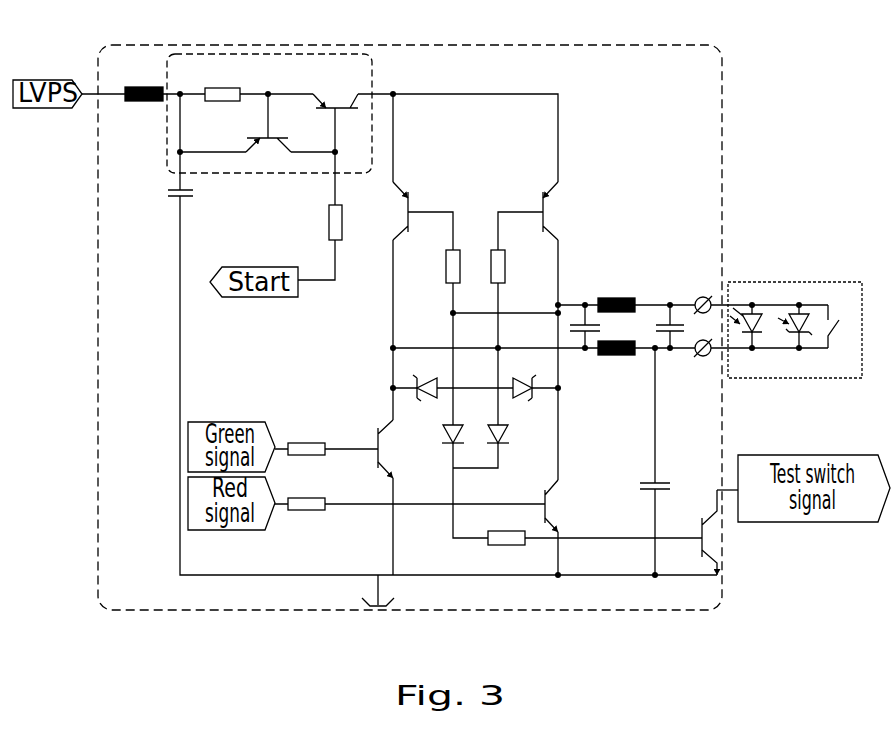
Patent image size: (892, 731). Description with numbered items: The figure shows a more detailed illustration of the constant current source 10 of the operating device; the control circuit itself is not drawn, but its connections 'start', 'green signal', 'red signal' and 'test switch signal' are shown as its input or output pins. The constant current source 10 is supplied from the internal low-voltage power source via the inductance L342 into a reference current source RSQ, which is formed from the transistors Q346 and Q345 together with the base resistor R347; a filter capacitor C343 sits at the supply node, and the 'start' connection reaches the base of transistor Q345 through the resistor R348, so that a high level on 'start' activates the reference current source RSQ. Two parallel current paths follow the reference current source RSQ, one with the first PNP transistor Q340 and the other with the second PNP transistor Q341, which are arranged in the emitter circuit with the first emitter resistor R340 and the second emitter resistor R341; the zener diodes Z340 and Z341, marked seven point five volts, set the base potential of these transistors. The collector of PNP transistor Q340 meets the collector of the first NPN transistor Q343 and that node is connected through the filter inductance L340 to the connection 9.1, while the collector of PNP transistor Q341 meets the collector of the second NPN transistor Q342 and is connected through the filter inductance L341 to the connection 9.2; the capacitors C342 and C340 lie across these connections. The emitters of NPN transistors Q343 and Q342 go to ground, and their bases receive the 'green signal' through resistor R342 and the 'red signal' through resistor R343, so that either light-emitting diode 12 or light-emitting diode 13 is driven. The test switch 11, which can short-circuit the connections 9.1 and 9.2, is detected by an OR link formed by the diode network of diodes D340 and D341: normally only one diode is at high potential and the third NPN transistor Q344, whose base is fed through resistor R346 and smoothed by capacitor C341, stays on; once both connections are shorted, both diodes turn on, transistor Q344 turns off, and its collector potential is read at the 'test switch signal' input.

The constant current source 10 is at (724, 90).
The reference current source RSQ is at (376, 78).
The inductance L342 is at (134, 108).
The base resistor R347 is at (228, 80).
The transistor Q345 is at (334, 83).
The transistor Q346 is at (264, 156).
The capacitor C343 is at (166, 207).
The resistor R348 is at (320, 227).
The first PNP transistor Q340 is at (377, 211).
The second PNP transistor Q341 is at (576, 211).
The first emitter resistor R340 is at (438, 267).
The second emitter resistor R341 is at (516, 269).
The filter inductance L340 is at (618, 290).
The filter inductance L341 is at (616, 365).
The capacitor C342 is at (566, 330).
The capacitor C340 is at (690, 332).
The capacitor C341 is at (678, 461).
The zener diode 7.5V Z340 is at (425, 387).
The zener diode 7.5V Z341 is at (530, 387).
The diode D340 is at (467, 425).
The first diode D341 is at (520, 451).
The first NPN transistor Q343 is at (415, 449).
The second NPN transistor Q342 is at (580, 506).
The third NPN transistor Q344 is at (738, 532).
The resistor R342 is at (308, 435).
The resistor R343 is at (308, 490).
The resistor R346 is at (496, 553).
The connection 9.1 is at (703, 290).
The connection 9.2 is at (703, 364).
The test switch 11 is at (830, 342).
The light-emitting diode 12 is at (749, 342).
The second light emitting diode 13 is at (795, 342).